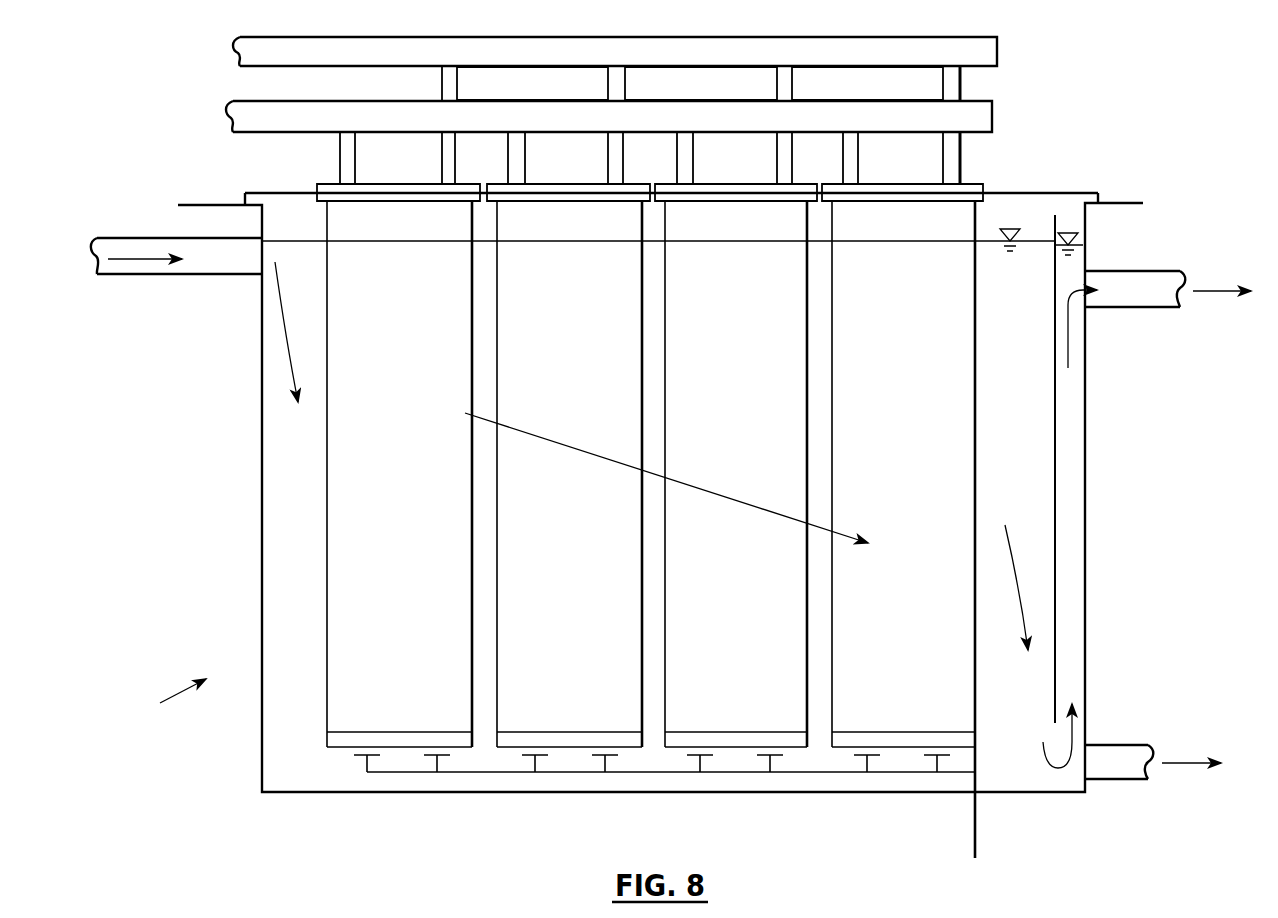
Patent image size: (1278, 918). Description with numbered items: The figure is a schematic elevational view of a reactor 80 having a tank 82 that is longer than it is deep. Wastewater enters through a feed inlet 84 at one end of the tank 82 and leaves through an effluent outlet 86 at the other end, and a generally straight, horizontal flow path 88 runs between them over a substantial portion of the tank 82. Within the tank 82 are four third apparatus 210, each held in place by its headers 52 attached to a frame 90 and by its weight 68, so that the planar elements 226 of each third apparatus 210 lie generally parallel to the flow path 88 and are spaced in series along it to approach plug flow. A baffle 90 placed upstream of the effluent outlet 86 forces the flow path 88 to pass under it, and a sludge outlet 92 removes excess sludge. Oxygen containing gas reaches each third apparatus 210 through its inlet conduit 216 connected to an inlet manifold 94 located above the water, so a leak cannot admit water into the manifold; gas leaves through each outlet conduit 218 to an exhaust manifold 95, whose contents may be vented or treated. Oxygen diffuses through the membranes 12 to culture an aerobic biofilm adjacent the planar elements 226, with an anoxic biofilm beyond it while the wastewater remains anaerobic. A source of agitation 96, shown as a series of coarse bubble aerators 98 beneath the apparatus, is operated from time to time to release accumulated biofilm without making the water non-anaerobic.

The membranes 12 is at (413, 490).
The headers 52 is at (316, 185).
The weight 68 is at (333, 738).
The reactor 80 is at (164, 699).
The tank 82 is at (290, 793).
The feed inlet 84 is at (137, 275).
The effluent outlet 86 is at (1163, 308).
The flow path 88 is at (680, 478).
The baffle 90 is at (1018, 191).
The sludge outlet 92 is at (1130, 780).
The inlet manifold 94 is at (993, 115).
The exhaust manifold 95 is at (998, 52).
The source of agitation 96 is at (977, 808).
The coarse bubble aerators 98 is at (370, 757).
The third apparatus 210 is at (422, 583).
The inlet conduit 216 is at (358, 152).
The outlet conduit 218 is at (462, 82).
The planar element 226 is at (423, 393).